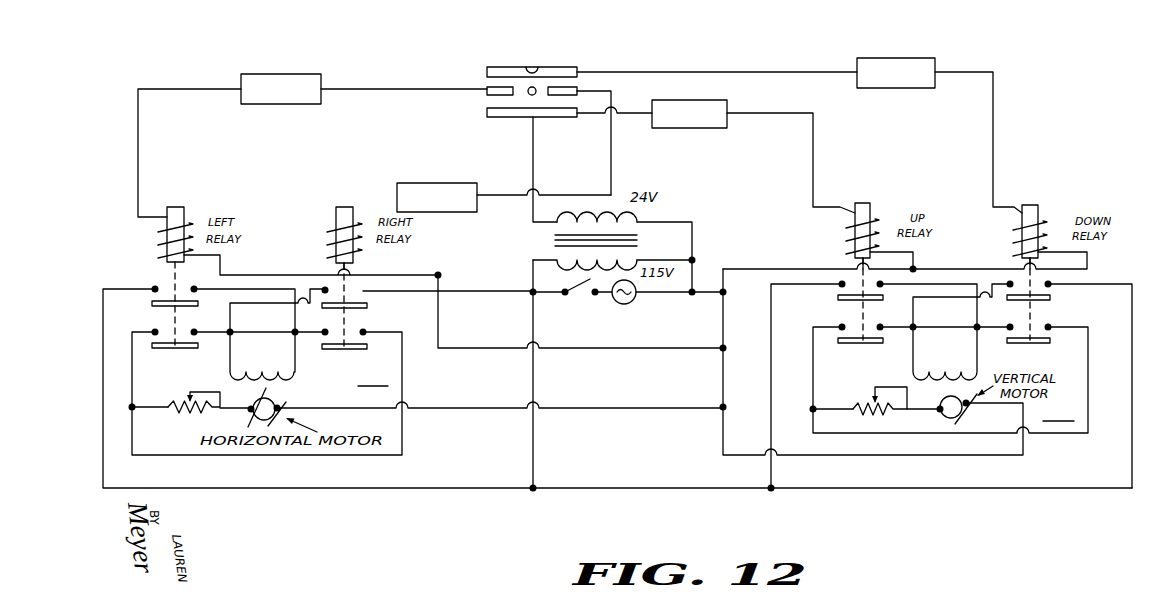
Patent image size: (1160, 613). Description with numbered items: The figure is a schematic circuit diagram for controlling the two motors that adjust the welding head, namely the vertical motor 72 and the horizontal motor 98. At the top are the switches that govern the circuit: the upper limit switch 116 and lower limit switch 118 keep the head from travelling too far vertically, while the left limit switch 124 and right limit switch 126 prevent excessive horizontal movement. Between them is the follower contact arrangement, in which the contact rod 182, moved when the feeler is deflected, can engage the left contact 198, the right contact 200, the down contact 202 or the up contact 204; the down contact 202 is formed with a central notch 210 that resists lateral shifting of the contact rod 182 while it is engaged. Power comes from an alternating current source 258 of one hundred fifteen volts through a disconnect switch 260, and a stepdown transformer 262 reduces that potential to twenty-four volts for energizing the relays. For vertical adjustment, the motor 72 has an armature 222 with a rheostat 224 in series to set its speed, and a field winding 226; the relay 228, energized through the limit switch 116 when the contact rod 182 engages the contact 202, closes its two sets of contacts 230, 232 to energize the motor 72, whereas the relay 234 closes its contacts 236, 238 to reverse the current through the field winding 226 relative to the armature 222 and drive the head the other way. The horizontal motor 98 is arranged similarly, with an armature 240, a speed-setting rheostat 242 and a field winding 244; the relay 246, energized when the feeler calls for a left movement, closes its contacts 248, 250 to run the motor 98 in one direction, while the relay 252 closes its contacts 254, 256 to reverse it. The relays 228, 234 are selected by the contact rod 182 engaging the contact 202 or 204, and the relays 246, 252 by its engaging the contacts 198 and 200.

The left limit switch 124 is at (290, 74).
The right limit switch 126 is at (437, 183).
The upper limit switch 116 is at (704, 128).
The lower limit switch 118 is at (900, 58).
The left contact 198 is at (487, 91).
The contact rod 182 is at (528, 88).
The central notch 210 is at (532, 67).
The down contact 202 is at (572, 67).
The right contact 200 is at (580, 88).
The up contact 204 is at (545, 117).
The relay 252 is at (318, 227).
The contacts 254 is at (323, 287).
The relay 246 is at (152, 235).
The contacts 248 is at (155, 287).
The contacts 250 is at (155, 336).
The field winding 244 is at (279, 347).
The contacts 256 is at (364, 330).
The armature 240 is at (271, 398).
The rheostat 242 is at (192, 412).
The horizontal motor 98 is at (373, 377).
The stepdown transformer 262 is at (541, 240).
The disconnect switch 260 is at (585, 297).
The alternating current source 258 is at (631, 305).
The relay 234 is at (838, 234).
The contacts 236 is at (840, 286).
The contacts 238 is at (840, 326).
The field winding 226 is at (938, 365).
The relay 228 is at (1034, 194).
The contacts 230 is at (1050, 286).
The contacts 232 is at (1050, 326).
The armature 222 is at (946, 390).
The rheostat 224 is at (878, 413).
The vertical motor 72 is at (1058, 412).